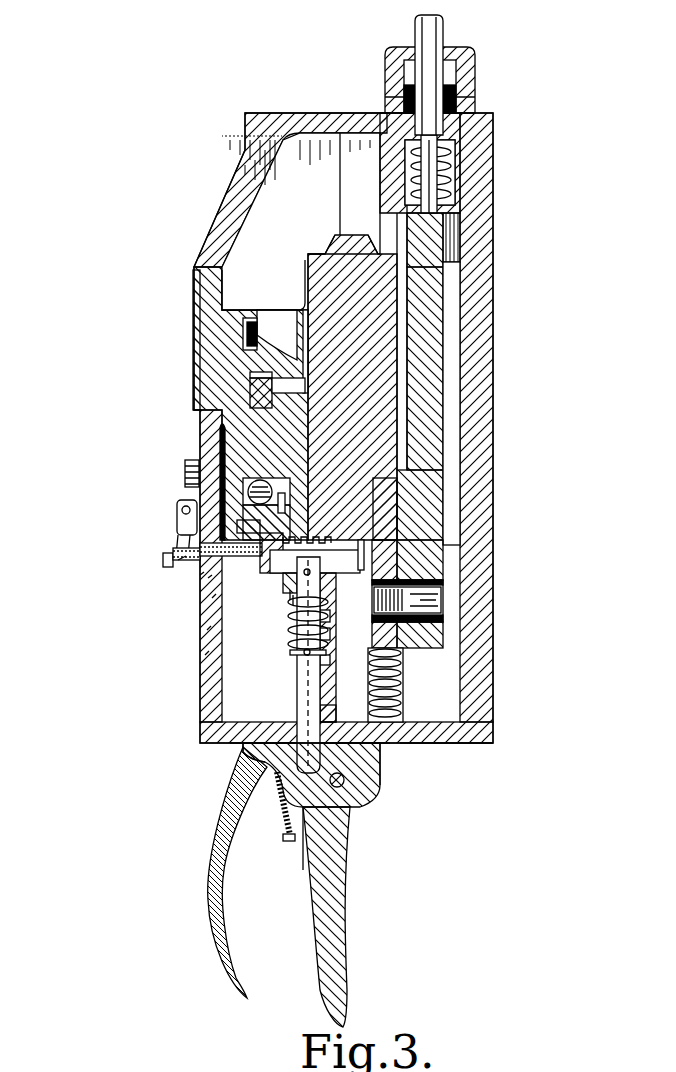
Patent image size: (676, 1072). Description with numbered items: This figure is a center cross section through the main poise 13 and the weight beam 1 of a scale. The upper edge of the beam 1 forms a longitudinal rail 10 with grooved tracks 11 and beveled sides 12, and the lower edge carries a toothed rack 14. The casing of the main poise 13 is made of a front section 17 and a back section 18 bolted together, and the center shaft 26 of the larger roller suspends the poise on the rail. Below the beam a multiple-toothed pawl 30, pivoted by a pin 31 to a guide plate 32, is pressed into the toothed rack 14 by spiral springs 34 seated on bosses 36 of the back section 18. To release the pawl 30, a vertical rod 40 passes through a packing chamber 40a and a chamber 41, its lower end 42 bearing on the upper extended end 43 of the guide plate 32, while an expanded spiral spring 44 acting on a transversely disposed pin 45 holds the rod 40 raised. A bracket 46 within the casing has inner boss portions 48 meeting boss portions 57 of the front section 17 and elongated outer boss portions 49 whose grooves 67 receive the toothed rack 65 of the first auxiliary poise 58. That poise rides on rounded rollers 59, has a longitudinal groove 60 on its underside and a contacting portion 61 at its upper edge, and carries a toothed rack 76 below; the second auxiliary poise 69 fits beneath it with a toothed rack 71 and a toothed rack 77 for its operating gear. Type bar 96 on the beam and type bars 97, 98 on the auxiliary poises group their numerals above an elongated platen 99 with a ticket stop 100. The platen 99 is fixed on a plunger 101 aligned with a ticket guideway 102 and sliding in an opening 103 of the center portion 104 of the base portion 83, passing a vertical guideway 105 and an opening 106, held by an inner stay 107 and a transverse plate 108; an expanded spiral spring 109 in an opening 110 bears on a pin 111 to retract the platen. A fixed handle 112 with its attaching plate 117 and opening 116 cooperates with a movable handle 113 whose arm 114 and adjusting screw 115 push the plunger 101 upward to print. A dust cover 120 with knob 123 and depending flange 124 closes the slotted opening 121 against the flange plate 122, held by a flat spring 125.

The weight beam 1 is at (427, 308).
The longitudinal rail 10 is at (340, 235).
The tracks 11 is at (322, 258).
The beveled sides 12 is at (330, 252).
The main poise 13 is at (235, 218).
The toothed rack 14 is at (398, 548).
The front section 17 is at (215, 432).
The back section 18 is at (470, 372).
The center shaft 26 is at (180, 522).
The multiple-toothed pawl 30 is at (400, 572).
The pin 31 is at (415, 600).
The guide plate 32 is at (425, 425).
The spiral springs 34 is at (400, 690).
The bosses 36 is at (405, 748).
The vertical rod 40 is at (444, 35).
The packing chamber 40a is at (477, 103).
The chamber 41 is at (440, 200).
The lower end of rod 42 is at (447, 212).
The upper extended end of guide plate 43 is at (455, 235).
The expanded spiral spring 44 is at (452, 178).
The transversely disposed pin 45 is at (457, 147).
The bracket 46 is at (282, 310).
The inner boss portions 48 is at (195, 300).
The outer boss portions 49 is at (277, 378).
The boss portions 57 is at (243, 330).
The first auxiliary poise 58 is at (193, 472).
The rounded rollers 59 is at (258, 478).
The longitudinal groove 60 is at (185, 503).
The longitudinal contacting portion 61 is at (219, 420).
The toothed rack 65 is at (250, 395).
The grooves 67 is at (250, 375).
The second auxiliary poise 69 is at (265, 481).
The toothed rack 71 is at (205, 655).
The toothed rack 76 is at (207, 630).
The toothed rack 77 is at (268, 565).
The base portion 83 is at (447, 748).
The type bar 96 is at (332, 520).
The type bar 97 is at (284, 500).
The type bar 98 is at (290, 582).
The platen 99 is at (281, 603).
The ticket stop 100 is at (330, 600).
The plunger 101 is at (299, 690).
The ticket guideway 102 is at (232, 556).
The opening 103 is at (358, 562).
The center portion 104 is at (335, 712).
The vertical guideway 105 is at (330, 660).
The opening 106 is at (243, 748).
The inner stay 107 is at (330, 615).
The transverse plate 108 is at (292, 612).
The expanded spiral spring 109 is at (300, 633).
The opening 110 is at (328, 635).
The pin 111 is at (306, 656).
The fixed handle 112 is at (208, 882).
The movable handle 113 is at (345, 888).
The arm 114 is at (288, 849).
The adjusting screw 115 is at (286, 838).
The opening 116 is at (375, 790).
The attaching plate 117 is at (250, 755).
The dust cover 120 is at (165, 556).
The slotted opening 121 is at (208, 578).
The flange plate 122 is at (212, 598).
The knob 123 is at (183, 562).
The depending flange 124 is at (200, 575).
The flat spring 125 is at (248, 490).